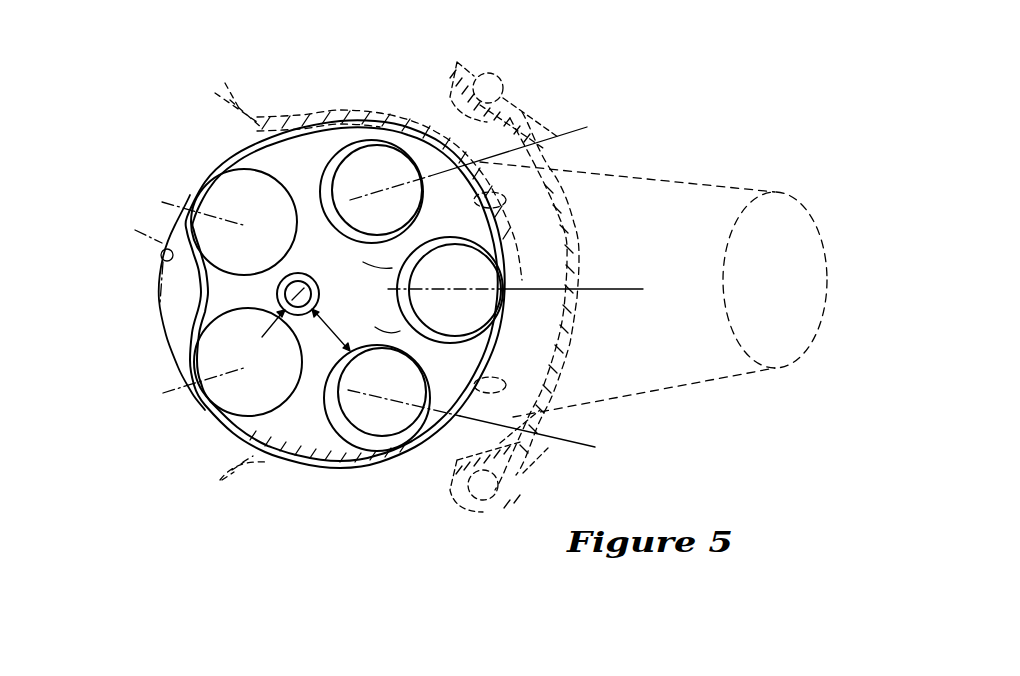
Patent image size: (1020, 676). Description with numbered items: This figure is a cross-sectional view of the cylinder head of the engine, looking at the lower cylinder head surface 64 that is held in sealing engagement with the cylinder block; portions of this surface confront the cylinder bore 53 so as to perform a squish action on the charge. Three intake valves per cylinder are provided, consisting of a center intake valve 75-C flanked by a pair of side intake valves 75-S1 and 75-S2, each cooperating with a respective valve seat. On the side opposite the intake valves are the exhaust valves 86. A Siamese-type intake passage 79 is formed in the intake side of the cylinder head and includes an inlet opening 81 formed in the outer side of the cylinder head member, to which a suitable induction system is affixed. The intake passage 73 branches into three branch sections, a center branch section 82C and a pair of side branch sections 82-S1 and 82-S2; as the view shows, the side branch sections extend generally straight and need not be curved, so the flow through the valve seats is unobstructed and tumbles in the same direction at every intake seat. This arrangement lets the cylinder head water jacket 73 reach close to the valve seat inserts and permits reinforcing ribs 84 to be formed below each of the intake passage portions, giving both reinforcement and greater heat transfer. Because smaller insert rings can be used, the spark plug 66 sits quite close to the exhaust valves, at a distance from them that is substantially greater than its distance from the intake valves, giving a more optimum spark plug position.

The side intake valve 75-S1 is at (317, 185).
The side intake valve 75-S2 is at (346, 440).
The center intake valve 75-C is at (351, 286).
The side branch section 82-S1 is at (335, 140).
The side branch section 82-S2 is at (395, 422).
The center branch section 82C is at (307, 313).
The spark plug 66 is at (290, 262).
The exhaust valves 86 is at (218, 194).
The cylinder bore 53 is at (132, 259).
The lower cylinder head surface 64 is at (184, 306).
The intake passage / cylinder head water jacket 73 is at (556, 326).
The reinforcing ribs 84 is at (513, 120).
The Siamese-type intake passage 79 is at (740, 194).
The inlet opening 81 is at (815, 232).